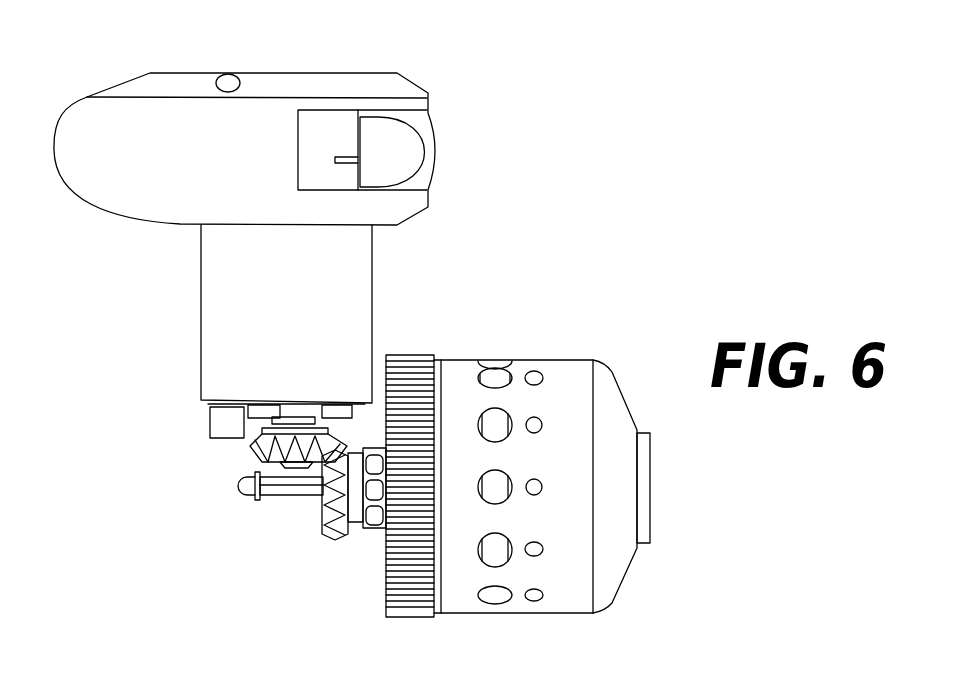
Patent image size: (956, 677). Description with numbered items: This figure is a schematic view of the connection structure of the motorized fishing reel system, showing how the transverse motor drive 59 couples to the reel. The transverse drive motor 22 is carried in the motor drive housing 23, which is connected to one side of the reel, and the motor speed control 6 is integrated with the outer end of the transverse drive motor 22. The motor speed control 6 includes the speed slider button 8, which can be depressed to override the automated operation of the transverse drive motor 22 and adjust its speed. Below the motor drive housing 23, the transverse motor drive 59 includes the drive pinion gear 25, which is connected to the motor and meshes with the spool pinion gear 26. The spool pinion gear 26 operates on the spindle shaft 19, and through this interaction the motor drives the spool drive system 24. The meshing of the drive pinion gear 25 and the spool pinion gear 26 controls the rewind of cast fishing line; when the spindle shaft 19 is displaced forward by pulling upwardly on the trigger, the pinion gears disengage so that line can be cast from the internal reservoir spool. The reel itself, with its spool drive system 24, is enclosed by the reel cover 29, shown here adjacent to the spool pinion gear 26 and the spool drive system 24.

The motor speed control 6 is at (268, 115).
The speed slider button 8 is at (432, 151).
The transverse motor drive 59 is at (287, 161).
The transverse drive motor 22 is at (282, 314).
The motor drive housing 23 is at (360, 278).
The drive pinion gear 25 is at (267, 433).
The spindle shaft 19 is at (280, 490).
The spool pinion gear 26 is at (338, 545).
The spool drive system 24 is at (352, 542).
The reel cover 29 is at (563, 386).